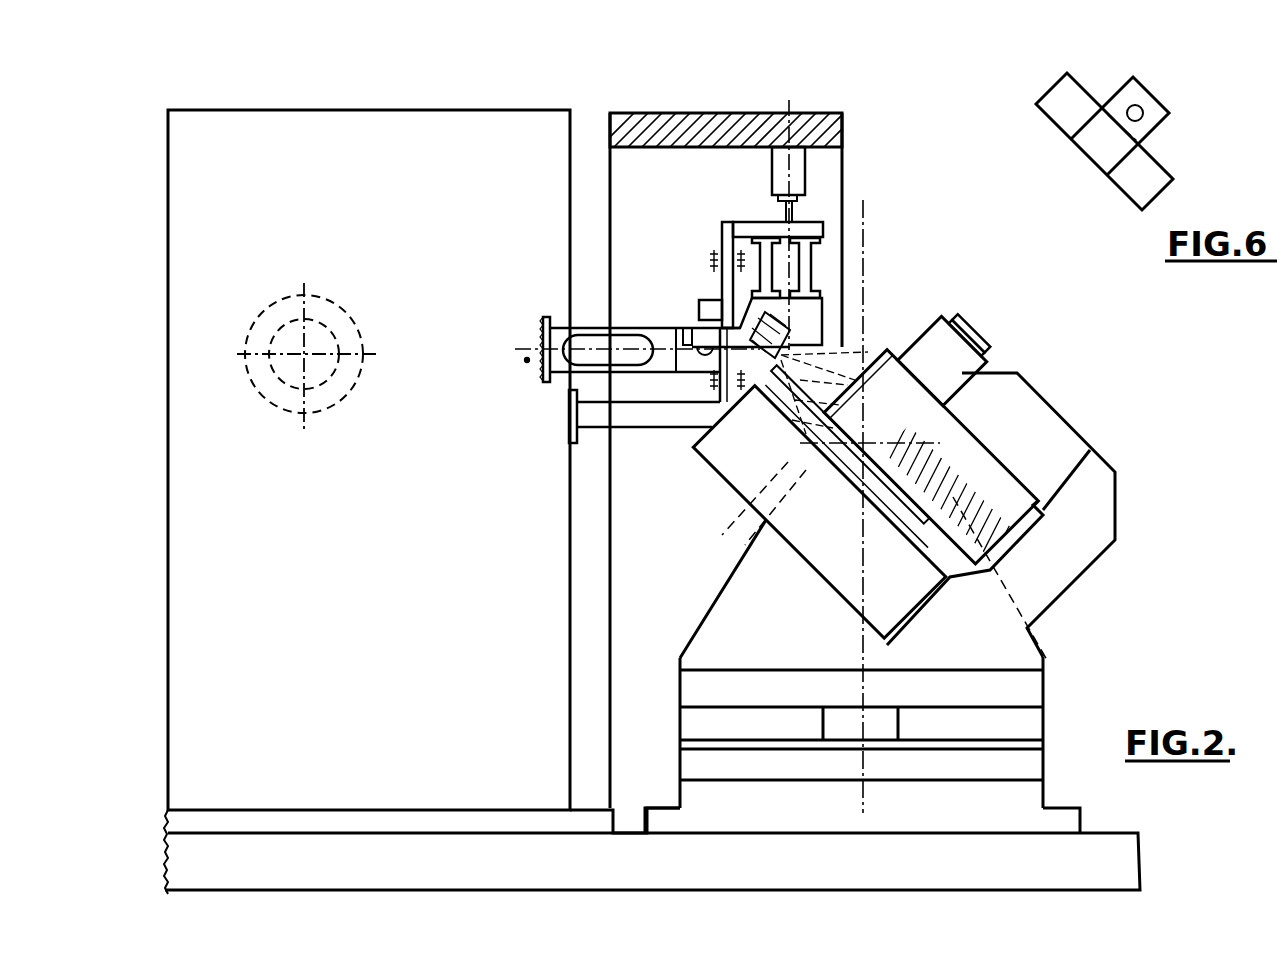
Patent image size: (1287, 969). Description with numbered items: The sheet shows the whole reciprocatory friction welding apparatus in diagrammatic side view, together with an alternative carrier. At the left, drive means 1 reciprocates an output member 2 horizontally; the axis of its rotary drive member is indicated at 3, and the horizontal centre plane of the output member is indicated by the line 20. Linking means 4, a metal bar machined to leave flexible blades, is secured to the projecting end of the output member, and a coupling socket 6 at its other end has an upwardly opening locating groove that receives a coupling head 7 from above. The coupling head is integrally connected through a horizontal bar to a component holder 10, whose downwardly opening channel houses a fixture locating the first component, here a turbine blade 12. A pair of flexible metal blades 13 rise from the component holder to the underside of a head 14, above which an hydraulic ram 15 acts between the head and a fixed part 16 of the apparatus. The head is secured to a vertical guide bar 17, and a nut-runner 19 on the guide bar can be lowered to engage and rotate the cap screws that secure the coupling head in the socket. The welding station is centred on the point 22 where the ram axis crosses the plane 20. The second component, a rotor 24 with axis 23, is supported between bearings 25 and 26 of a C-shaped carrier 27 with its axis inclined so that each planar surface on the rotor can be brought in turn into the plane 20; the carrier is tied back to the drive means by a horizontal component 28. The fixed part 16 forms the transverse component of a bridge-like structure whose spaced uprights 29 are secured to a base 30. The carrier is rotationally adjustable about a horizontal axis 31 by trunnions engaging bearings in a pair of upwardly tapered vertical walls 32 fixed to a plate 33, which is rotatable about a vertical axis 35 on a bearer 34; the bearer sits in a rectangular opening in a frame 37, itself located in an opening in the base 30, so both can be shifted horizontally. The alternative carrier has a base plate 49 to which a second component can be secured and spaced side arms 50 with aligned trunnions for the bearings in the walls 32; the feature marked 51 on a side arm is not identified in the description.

In FIG. 2, the drive means 1 is at (437, 145).
In FIG. 2, the output member 2 is at (547, 325).
In FIG. 2, the axis of the rotary drive member 3 is at (306, 350).
In FIG. 2, the linking means 4 is at (625, 326).
In FIG. 2, the coupling socket 6 is at (694, 352).
In FIG. 2, the coupling head 7 is at (703, 338).
In FIG. 2, the component holder 10 is at (822, 312).
In FIG. 2, the turbine blade 12 is at (775, 345).
In FIG. 2, the flexible metal blades 13 is at (815, 268).
In FIG. 2, the head 14 is at (815, 230).
In FIG. 2, the hydraulic ram 15 is at (805, 163).
In FIG. 2, the fixed part 16 is at (812, 135).
In FIG. 2, the guide bar 17 is at (722, 296).
In FIG. 2, the nut-runner 19 is at (703, 305).
In FIG. 2, the horizontal centre plane 20 is at (588, 348).
In FIG. 2, the point 22 is at (775, 182).
In FIG. 2, the axis of the rotor 23 is at (1000, 313).
In FIG. 2, the rotor 24 is at (940, 490).
In FIG. 2, the bearing 25 is at (975, 373).
In FIG. 2, the bearing 26 is at (795, 525).
In FIG. 2, the C-shaped carrier 27 is at (1090, 470).
In FIG. 2, the horizontal component 28 is at (655, 415).
In FIG. 2, the uprights 29 is at (638, 577).
In FIG. 2, the base 30 is at (1105, 860).
In FIG. 2, the horizontal axis 31 is at (805, 548).
In FIG. 2, the vertical walls 32 is at (1023, 660).
In FIG. 2, the plate 33 is at (1020, 688).
In FIG. 2, the bearer 34 is at (1010, 763).
In FIG. 2, the vertical axis 35 is at (860, 645).
In FIG. 2, the frame 37 is at (990, 805).
In FIG. 6, the base plate 49 is at (1138, 185).
In FIG. 6, the side arms 50 is at (1150, 108).
In FIG. 6, the hole 51 is at (1130, 105).